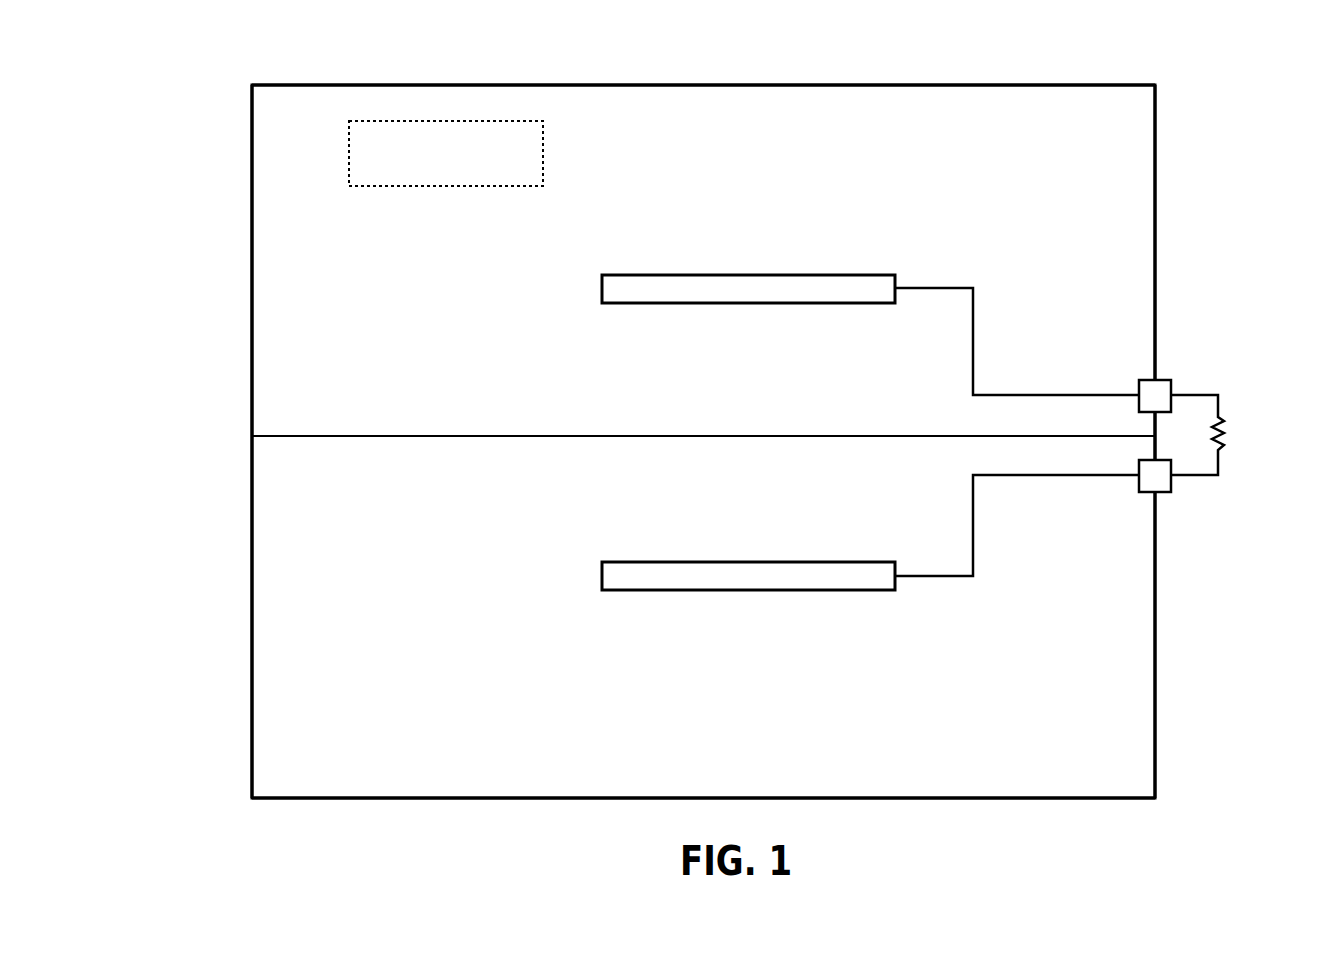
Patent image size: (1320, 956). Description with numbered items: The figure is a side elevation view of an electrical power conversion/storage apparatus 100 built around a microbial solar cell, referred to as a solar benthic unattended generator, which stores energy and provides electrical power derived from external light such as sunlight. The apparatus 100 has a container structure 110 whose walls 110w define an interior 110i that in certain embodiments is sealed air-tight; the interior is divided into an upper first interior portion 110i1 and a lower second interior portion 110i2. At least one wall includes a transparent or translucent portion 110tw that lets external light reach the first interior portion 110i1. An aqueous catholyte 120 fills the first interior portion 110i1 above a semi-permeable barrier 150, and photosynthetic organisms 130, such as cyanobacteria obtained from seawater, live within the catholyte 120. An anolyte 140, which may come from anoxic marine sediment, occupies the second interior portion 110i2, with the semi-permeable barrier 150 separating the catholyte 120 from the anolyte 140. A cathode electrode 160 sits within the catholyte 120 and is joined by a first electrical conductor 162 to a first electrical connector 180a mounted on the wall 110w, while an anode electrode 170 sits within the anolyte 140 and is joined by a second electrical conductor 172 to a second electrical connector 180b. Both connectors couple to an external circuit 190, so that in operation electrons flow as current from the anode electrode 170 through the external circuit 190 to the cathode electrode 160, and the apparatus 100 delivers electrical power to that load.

The electrical power conversion/storage apparatus 100 is at (218, 104).
The container structure 110 is at (737, 85).
The transparent or translucent wall portion 110tw is at (350, 85).
The wall 110w is at (576, 85).
The interior 110i is at (920, 100).
The first interior portion 110i1 is at (268, 380).
The second interior portion 110i2 is at (268, 670).
The catholyte 120 is at (276, 290).
The photosynthetic organisms 130 is at (349, 153).
The anolyte 140 is at (278, 540).
The semi-permeable barrier 150 is at (583, 436).
The cathode electrode 160 is at (602, 287).
The first electrical conductor 162 is at (973, 347).
The anode electrode 170 is at (602, 573).
The second electrical conductor 172 is at (973, 523).
The first electrical connector 180a is at (1163, 380).
The second electrical connector 180b is at (1163, 492).
The external circuit 190 is at (1228, 452).